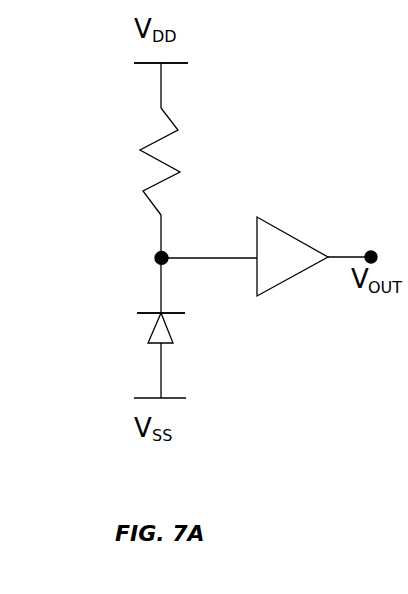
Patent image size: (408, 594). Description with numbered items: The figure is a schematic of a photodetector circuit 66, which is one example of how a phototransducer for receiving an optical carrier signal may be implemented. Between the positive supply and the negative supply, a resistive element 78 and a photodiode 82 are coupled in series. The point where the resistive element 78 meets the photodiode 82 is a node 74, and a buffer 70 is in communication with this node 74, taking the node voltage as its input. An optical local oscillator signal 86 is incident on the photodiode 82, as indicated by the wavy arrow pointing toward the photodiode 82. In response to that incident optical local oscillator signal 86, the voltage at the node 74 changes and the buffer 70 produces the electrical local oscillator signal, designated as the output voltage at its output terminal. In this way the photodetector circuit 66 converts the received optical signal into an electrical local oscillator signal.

The photodetector circuit 66 is at (62, 109).
The resistive element 78 is at (178, 171).
The node 74 is at (168, 255).
The buffer 70 is at (287, 233).
The photodiode 82 is at (175, 345).
The optical local oscillator signal 86 is at (130, 302).